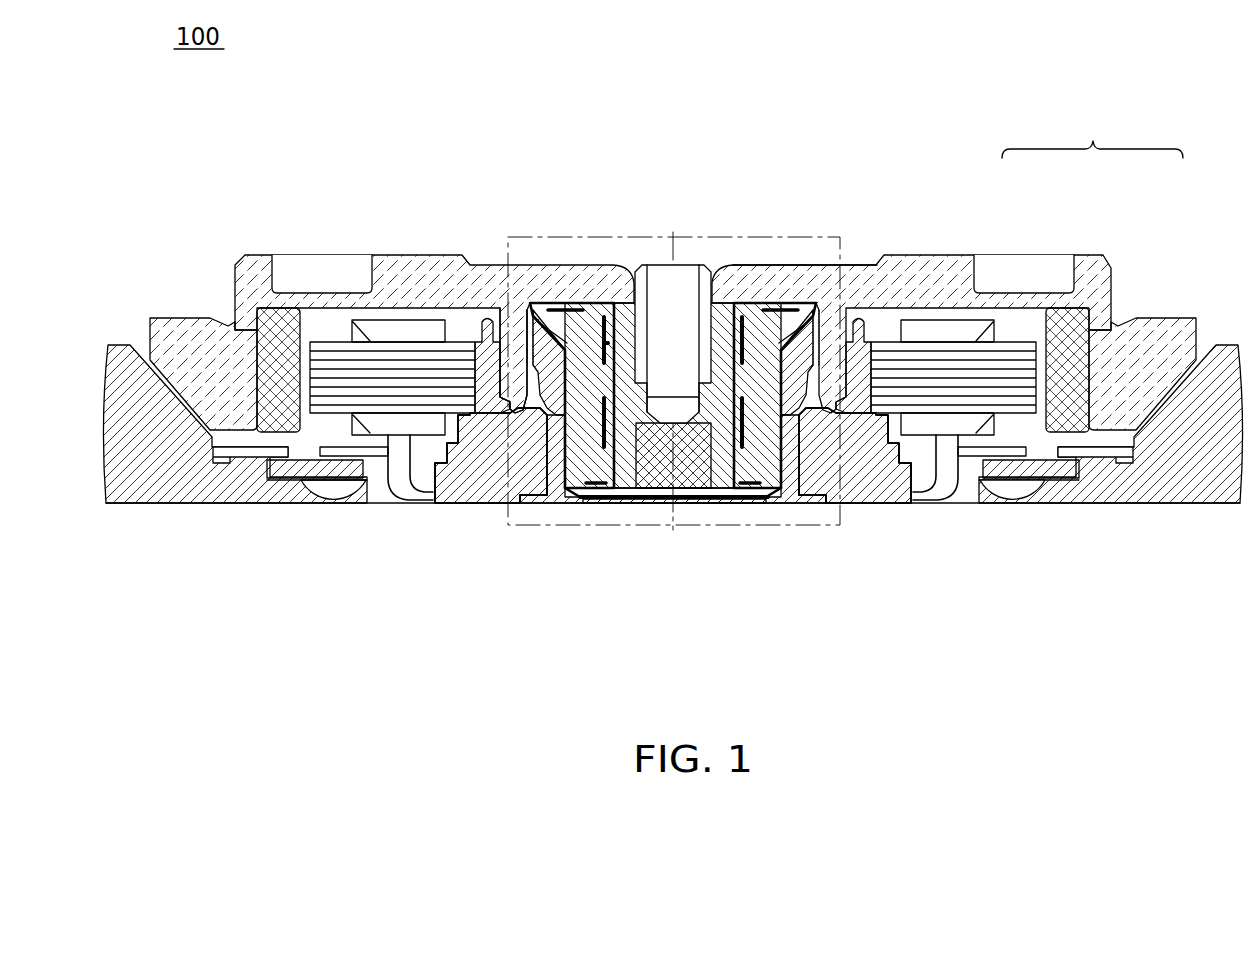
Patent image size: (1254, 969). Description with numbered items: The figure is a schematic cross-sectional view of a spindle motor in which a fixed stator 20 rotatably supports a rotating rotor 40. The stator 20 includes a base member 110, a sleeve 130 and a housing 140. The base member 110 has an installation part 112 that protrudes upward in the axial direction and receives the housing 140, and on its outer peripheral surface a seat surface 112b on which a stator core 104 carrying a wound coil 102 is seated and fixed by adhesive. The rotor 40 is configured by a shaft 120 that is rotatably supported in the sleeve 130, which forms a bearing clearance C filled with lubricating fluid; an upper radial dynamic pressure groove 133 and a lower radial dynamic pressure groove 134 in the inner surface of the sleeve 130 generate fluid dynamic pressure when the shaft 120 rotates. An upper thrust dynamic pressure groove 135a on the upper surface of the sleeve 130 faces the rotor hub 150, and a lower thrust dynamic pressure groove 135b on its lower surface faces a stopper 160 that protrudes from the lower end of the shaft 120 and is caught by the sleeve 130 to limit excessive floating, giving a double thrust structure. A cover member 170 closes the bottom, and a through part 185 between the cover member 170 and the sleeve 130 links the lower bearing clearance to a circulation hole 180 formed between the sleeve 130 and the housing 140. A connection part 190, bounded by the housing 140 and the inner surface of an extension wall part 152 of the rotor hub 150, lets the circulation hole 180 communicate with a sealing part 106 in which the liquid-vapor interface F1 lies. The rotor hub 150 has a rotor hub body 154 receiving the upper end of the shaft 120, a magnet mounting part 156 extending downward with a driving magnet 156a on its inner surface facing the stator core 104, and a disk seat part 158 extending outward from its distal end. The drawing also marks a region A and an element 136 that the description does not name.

The stator 20 is at (1134, 522).
The rotor 40 is at (256, 250).
The coil 102 is at (423, 424).
The stator core 104 is at (330, 400).
The sealing part 106 is at (849, 263).
The base member 110 is at (487, 483).
The installation part 112 is at (985, 478).
The seat surface 112b is at (965, 494).
The shaft 120 is at (697, 499).
The sleeve 130 is at (600, 475).
The upper radial dynamic pressure groove 133 is at (596, 303).
The lower radial dynamic pressure groove 134 is at (538, 318).
The upper thrust dynamic pressure groove 135a is at (768, 310).
The lower thrust dynamic pressure groove 135b is at (587, 484).
The rotor hub 136 is at (815, 311).
The housing 140 is at (556, 456).
The rotor hub 150 is at (1092, 136).
The extension wall part 152 is at (513, 363).
The rotor hub body 154 is at (957, 263).
The magnet mounting part 156 is at (1094, 282).
The driving magnet 156a is at (273, 413).
The disk seat part 158 is at (1163, 320).
The stopper 160 is at (742, 498).
The cover member 170 is at (638, 501).
The circulation hole 180 is at (862, 386).
The through part 185 is at (770, 500).
The connection part 190 is at (880, 398).
The bearing assembly region A is at (818, 244).
The bearing clearance C is at (610, 345).
The liquid-vapor interface F1 is at (528, 312).